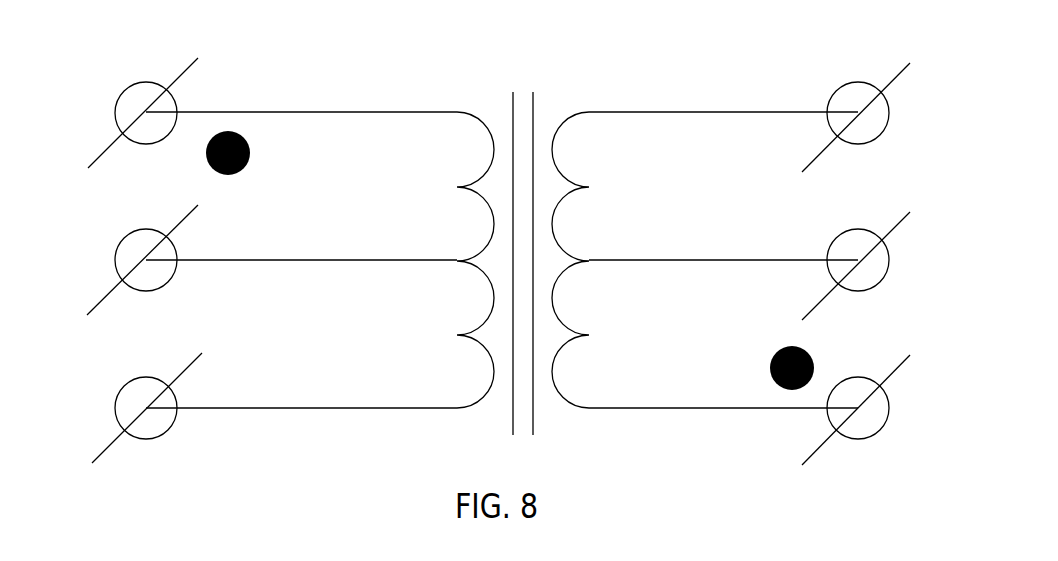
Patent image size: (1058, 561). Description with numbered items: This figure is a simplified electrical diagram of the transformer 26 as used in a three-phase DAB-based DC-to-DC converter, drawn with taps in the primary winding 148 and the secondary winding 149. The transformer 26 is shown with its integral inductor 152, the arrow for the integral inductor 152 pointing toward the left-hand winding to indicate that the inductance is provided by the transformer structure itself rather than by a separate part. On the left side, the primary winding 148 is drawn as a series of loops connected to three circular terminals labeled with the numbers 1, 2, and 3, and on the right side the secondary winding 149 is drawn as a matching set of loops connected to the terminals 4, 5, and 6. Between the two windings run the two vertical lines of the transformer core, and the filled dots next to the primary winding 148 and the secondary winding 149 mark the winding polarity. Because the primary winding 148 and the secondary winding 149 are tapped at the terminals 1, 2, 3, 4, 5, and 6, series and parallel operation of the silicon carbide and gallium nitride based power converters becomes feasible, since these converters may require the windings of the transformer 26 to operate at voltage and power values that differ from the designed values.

The integral inductor 152 is at (292, 76).
The primary winding 148 is at (383, 112).
The secondary winding 149 is at (738, 110).
The transformer 26 is at (657, 49).
The terminal 1 is at (139, 113).
The terminal 2 is at (138, 260).
The terminal 3 is at (140, 408).
The terminal 4 is at (872, 410).
The terminal 5 is at (872, 266).
The terminal 6 is at (872, 117).